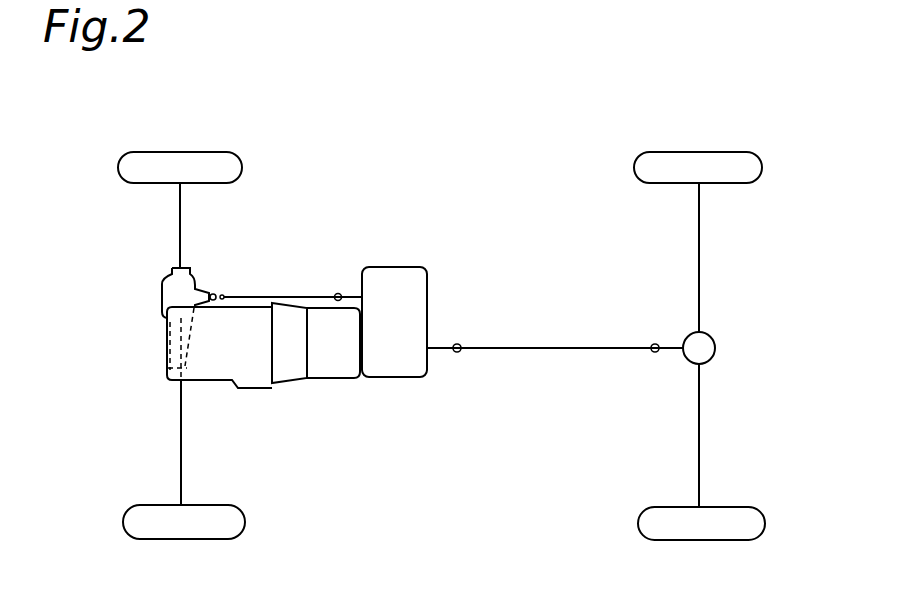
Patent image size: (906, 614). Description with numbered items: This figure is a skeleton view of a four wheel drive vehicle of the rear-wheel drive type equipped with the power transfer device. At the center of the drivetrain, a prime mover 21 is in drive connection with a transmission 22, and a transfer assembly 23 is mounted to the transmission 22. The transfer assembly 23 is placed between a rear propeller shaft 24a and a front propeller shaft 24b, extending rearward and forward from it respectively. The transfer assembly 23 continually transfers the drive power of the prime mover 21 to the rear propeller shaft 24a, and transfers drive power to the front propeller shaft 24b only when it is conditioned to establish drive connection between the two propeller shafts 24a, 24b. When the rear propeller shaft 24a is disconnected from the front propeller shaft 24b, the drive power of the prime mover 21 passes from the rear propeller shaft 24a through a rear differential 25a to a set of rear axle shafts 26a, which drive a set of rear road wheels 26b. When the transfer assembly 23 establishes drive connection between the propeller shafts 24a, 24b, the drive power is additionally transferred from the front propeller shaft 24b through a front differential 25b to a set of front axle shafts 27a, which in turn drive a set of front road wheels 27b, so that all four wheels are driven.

The prime mover 21 is at (244, 376).
The transmission 22 is at (340, 358).
The transfer assembly 23 is at (418, 278).
The rear propeller shaft 24a is at (558, 346).
The front propeller shaft 24b is at (290, 296).
The rear differential 25a is at (715, 348).
The front differential 25b is at (168, 295).
The rear axle shaft 26a is at (699, 255).
The rear road wheel 26b is at (698, 160).
The front axle shaft 27a is at (179, 217).
The front road wheel 27b is at (173, 160).